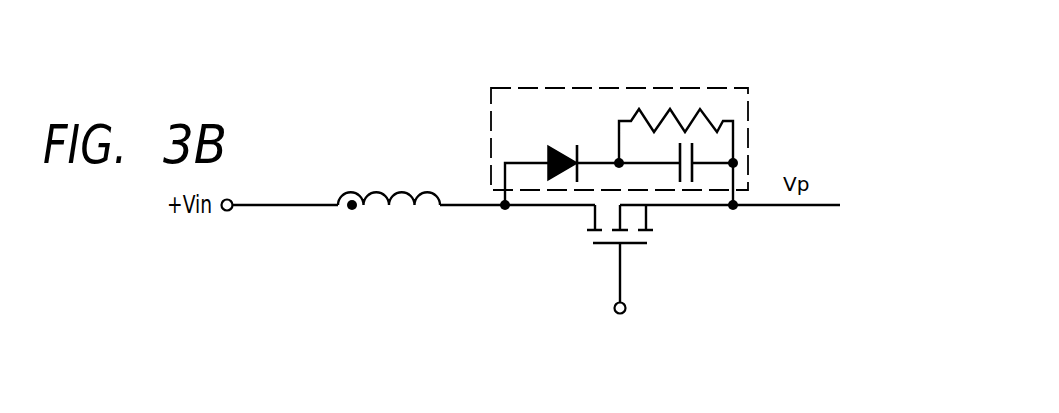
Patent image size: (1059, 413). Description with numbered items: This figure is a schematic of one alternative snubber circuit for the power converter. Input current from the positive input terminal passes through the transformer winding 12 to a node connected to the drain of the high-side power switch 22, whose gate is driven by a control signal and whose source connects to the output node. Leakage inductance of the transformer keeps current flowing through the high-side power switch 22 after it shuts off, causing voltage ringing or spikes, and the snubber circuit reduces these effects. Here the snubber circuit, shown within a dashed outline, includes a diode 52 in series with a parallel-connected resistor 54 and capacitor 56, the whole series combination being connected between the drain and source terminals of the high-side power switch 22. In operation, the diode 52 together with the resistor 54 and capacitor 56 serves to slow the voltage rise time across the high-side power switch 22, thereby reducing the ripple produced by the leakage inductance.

The transformer winding 12 is at (378, 190).
The diode 52 is at (562, 150).
The resistor 54 is at (702, 110).
The capacitor 56 is at (703, 144).
The high-side power switch 22 is at (633, 247).